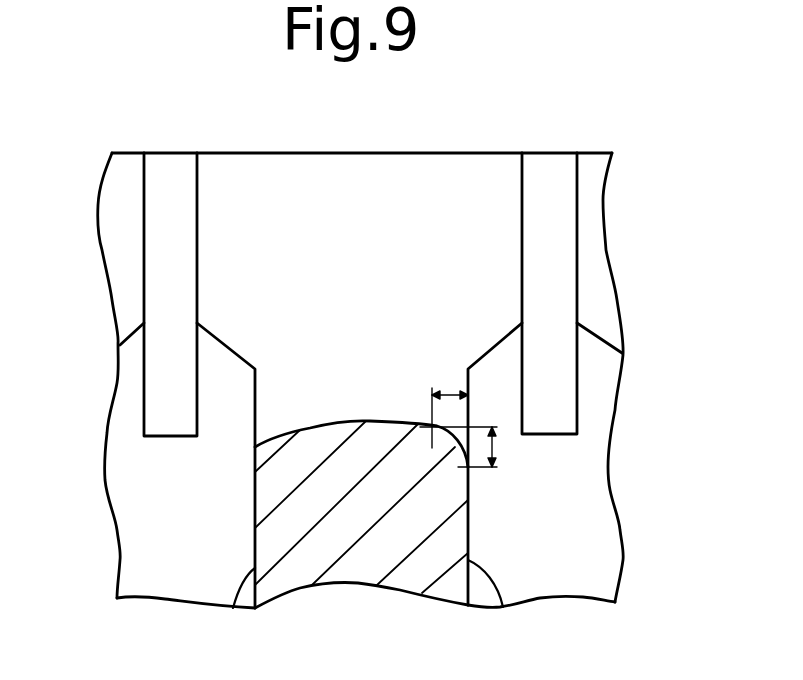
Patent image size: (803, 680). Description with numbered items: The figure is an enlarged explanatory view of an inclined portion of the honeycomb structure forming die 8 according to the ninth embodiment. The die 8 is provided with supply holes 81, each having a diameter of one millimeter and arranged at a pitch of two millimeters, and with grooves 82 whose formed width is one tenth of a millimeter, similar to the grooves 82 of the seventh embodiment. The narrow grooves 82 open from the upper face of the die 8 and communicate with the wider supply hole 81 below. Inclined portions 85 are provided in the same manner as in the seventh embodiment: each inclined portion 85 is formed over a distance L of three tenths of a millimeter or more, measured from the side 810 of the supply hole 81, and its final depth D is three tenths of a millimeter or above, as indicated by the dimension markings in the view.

The honeycomb structure forming die 8 is at (437, 141).
The groove 82 is at (170, 214).
The supply hole 81 is at (165, 552).
The side of the supply hole 810 is at (229, 610).
The inclined portion 85 is at (446, 423).